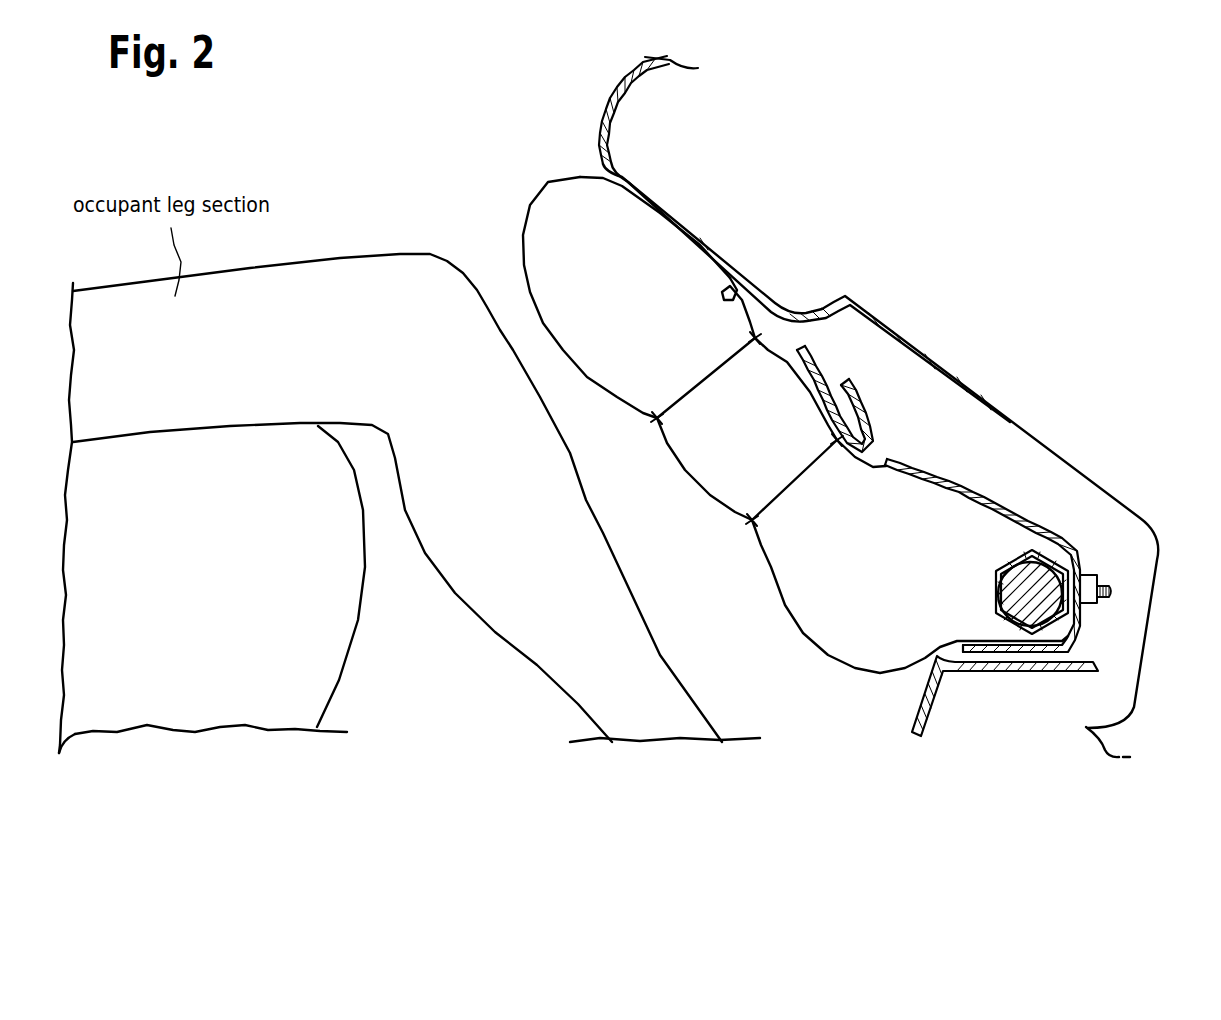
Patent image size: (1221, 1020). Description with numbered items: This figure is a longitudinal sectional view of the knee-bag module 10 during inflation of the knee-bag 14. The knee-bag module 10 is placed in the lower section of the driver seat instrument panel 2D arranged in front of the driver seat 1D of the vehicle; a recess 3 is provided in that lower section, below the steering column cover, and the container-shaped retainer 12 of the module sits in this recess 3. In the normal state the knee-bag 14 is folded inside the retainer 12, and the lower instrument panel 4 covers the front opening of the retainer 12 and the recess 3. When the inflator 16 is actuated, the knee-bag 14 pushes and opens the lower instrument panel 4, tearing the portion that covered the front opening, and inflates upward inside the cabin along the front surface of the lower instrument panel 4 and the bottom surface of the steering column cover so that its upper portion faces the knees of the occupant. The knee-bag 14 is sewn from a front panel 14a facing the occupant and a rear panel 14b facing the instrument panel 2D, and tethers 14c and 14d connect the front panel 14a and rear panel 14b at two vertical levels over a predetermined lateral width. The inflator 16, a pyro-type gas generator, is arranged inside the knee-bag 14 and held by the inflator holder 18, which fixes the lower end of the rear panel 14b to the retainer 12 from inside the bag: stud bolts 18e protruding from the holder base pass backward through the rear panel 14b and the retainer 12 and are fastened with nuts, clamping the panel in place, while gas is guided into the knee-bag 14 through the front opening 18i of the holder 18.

The driver seat 1D is at (409, 520).
The driver seat instrument panel 2D is at (603, 110).
The recess 3 is at (1106, 535).
The lower instrument panel 4 is at (854, 399).
The knee-bag module 10 is at (1042, 498).
The retainer 12 is at (982, 503).
The knee-bag 14 is at (533, 197).
The front panel 14a is at (704, 487).
The rear panel 14b is at (747, 265).
The tether 14c is at (704, 373).
The tether 14d is at (808, 485).
The inflator 16 is at (997, 594).
The inflator holder 18 is at (1005, 643).
The stud bolt 18e is at (1153, 607).
The front opening 18i is at (1146, 574).